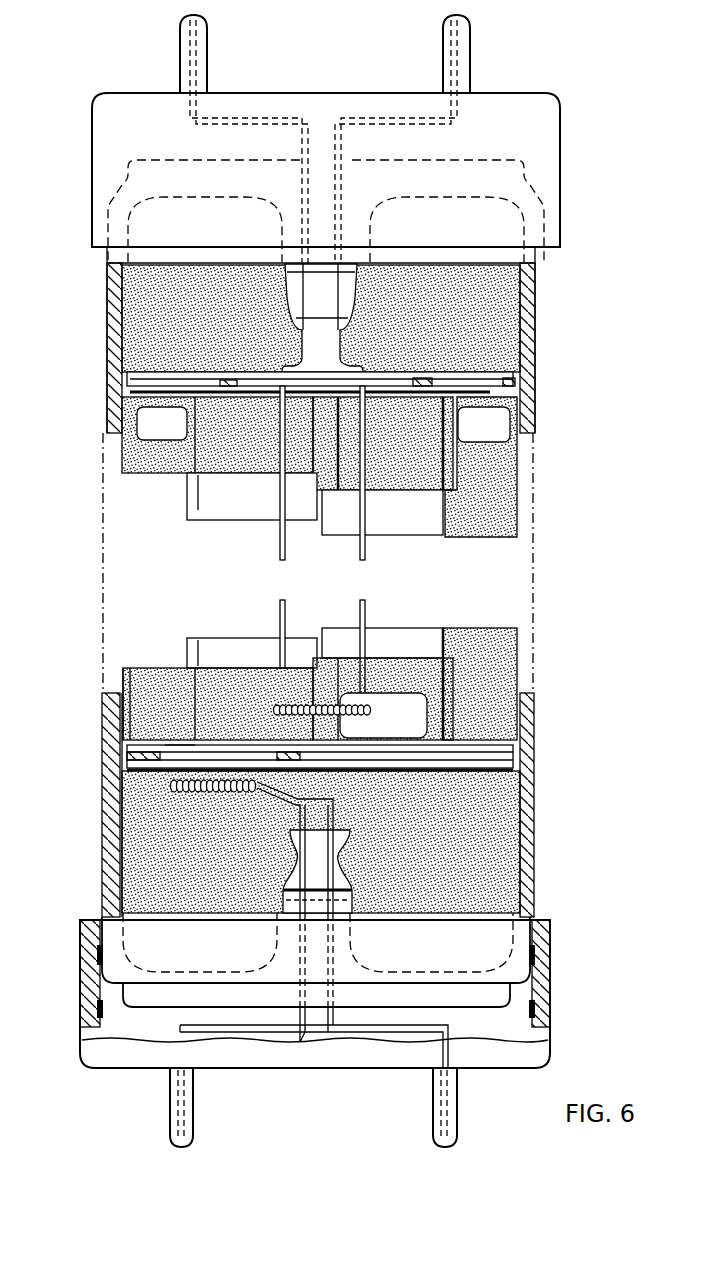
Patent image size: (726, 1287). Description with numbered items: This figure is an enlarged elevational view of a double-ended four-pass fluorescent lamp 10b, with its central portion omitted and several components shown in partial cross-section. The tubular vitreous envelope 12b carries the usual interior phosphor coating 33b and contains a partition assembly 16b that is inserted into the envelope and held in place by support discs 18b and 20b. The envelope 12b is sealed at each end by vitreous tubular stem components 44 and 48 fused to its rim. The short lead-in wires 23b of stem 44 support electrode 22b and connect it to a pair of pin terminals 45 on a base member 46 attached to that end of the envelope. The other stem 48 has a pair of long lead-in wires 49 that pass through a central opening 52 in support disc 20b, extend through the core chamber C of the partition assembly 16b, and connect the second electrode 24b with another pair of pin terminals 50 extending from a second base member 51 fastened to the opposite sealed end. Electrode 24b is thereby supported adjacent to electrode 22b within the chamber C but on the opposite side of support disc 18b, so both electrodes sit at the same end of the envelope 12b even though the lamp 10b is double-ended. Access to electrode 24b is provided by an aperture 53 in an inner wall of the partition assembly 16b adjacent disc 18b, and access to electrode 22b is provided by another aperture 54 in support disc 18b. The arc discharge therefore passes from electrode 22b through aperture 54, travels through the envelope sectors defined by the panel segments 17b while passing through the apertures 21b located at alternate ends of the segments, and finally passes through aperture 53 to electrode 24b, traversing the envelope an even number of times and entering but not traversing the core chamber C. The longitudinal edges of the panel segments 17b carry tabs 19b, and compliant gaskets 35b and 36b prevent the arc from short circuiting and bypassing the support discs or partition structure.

The lamp 10b is at (597, 787).
The tubular vitreous envelope 12b is at (535, 433).
The partition assembly 16b is at (220, 519).
The panel segments 17b is at (220, 503).
The support disc 18b is at (433, 757).
The tabs 19b is at (125, 683).
The support disc 20b is at (477, 384).
The apertures 21b is at (157, 420).
The electrode 22b is at (210, 790).
The short lead-in wires 23b is at (332, 806).
The electrode 24b is at (288, 698).
The phosphor coating 33b is at (130, 291).
The compliant gasket 35b is at (515, 747).
The compliant gasket 36b is at (135, 372).
The vitreous tubular stem component 44 is at (357, 893).
The pin terminals 45 is at (188, 1122).
The base member 46 is at (535, 1047).
The vitreous tubular stem component 48 is at (345, 277).
The long lead-in wires 49 is at (287, 557).
The pin terminals 50 is at (199, 50).
The base member 51 is at (488, 118).
The central opening 52 is at (375, 384).
The aperture 53 is at (397, 718).
The aperture 54 is at (177, 753).
The core chamber C is at (378, 505).